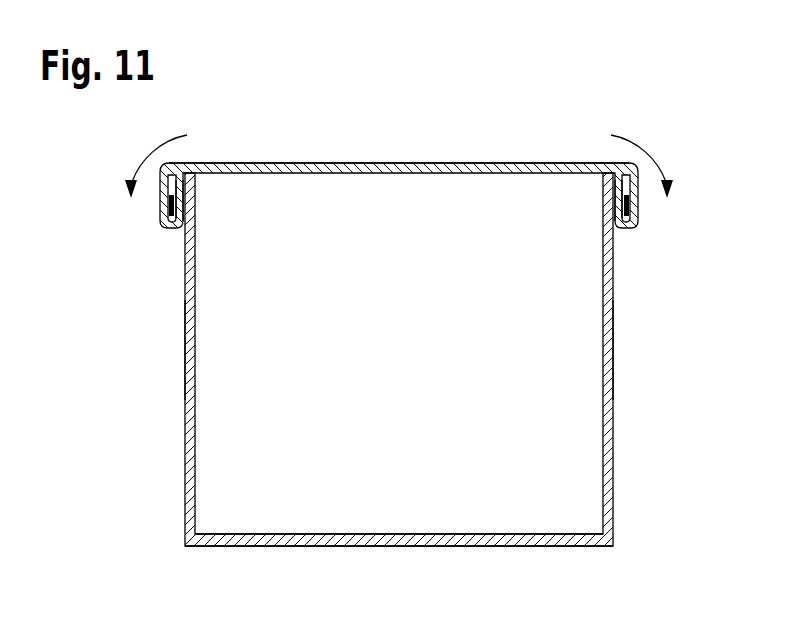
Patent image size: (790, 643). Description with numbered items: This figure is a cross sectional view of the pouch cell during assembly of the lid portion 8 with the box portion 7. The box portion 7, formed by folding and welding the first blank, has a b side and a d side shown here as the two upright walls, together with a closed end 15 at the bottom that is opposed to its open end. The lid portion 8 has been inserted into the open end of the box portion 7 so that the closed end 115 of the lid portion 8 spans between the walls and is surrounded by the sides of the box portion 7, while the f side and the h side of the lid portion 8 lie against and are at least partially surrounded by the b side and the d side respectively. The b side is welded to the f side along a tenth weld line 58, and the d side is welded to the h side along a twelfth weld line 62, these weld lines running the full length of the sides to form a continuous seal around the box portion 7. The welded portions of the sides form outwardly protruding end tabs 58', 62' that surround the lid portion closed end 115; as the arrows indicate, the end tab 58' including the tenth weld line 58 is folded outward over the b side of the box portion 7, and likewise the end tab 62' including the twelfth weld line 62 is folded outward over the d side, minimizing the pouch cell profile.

The lid portion 8 is at (363, 162).
The closed end of the lid portion 115 is at (420, 162).
The box portion 7 is at (612, 415).
The closed end of the box portion 15 is at (433, 547).
The b side b is at (190, 352).
The d side d is at (600, 363).
The tenth weld line 58 is at (135, 238).
The end tab 58' is at (123, 224).
The twelfth weld line 62 is at (665, 238).
The end tab 62' is at (676, 224).
The f side f is at (162, 212).
The h side h is at (632, 212).